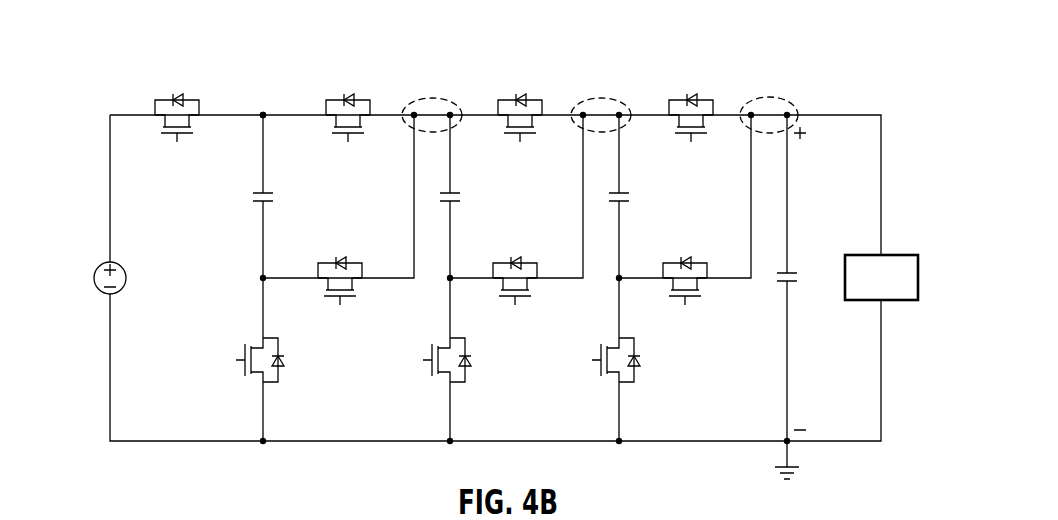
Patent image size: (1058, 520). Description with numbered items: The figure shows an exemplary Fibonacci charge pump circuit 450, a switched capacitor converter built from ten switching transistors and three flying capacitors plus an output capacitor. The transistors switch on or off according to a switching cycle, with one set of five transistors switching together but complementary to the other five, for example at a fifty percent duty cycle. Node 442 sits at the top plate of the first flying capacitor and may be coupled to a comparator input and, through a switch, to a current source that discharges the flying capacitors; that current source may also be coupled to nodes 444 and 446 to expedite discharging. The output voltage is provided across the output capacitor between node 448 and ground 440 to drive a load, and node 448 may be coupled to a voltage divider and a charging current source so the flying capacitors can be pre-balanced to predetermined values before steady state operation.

The ground 440 is at (793, 482).
The node 442 is at (264, 113).
The node 444 is at (430, 98).
The node 446 is at (598, 98).
The node 448 is at (765, 97).
The Fibonacci charge pump circuit 450 is at (506, 269).